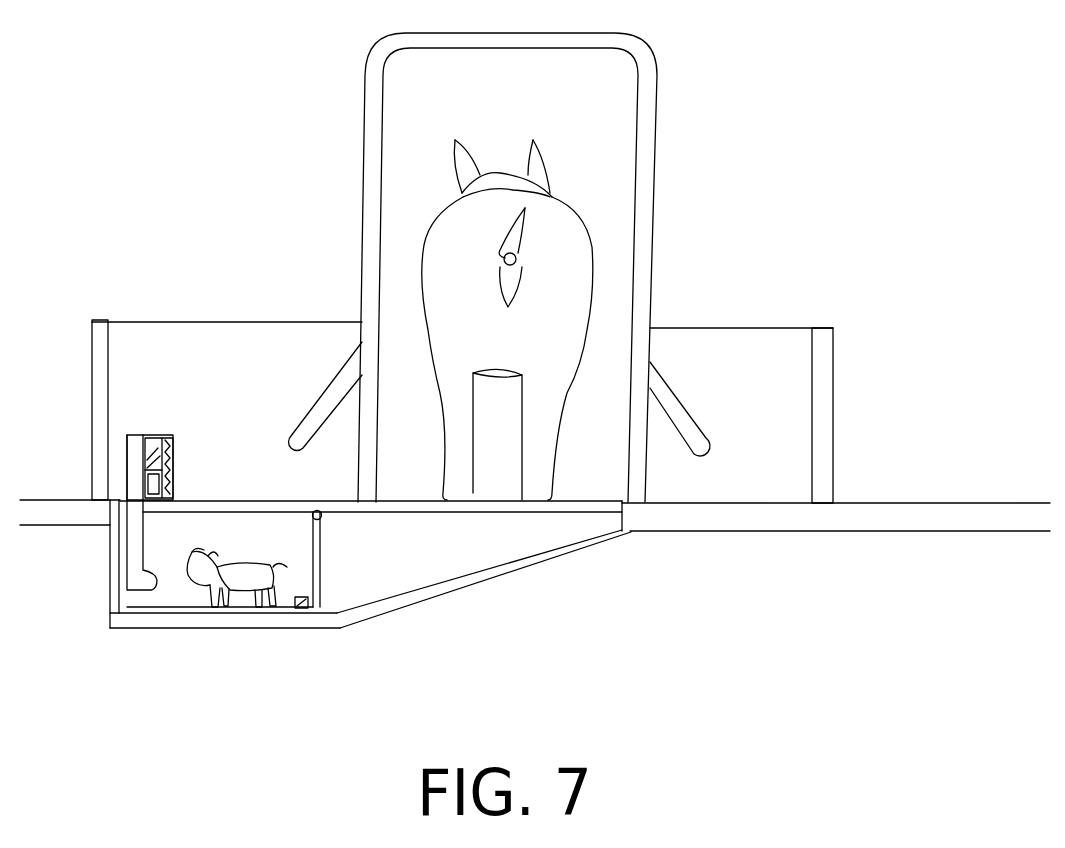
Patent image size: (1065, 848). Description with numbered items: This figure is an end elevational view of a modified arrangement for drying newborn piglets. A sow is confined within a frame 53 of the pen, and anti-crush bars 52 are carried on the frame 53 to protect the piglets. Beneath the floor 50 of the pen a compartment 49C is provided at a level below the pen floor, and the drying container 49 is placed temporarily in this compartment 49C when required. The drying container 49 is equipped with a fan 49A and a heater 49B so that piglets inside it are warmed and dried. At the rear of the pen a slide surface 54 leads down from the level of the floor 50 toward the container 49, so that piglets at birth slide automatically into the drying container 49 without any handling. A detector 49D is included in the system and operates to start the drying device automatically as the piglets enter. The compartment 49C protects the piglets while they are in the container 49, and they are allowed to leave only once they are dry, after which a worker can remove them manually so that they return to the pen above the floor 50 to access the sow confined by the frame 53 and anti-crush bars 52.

The drying container 49 is at (172, 603).
The fan 49A is at (148, 442).
The heater 49B is at (173, 443).
The compartment 49C is at (265, 622).
The detector 49D is at (303, 610).
The floor 50 is at (710, 520).
The anti-crush bars 52 is at (700, 418).
The frame 53 is at (645, 243).
The slide surface 54 is at (478, 573).